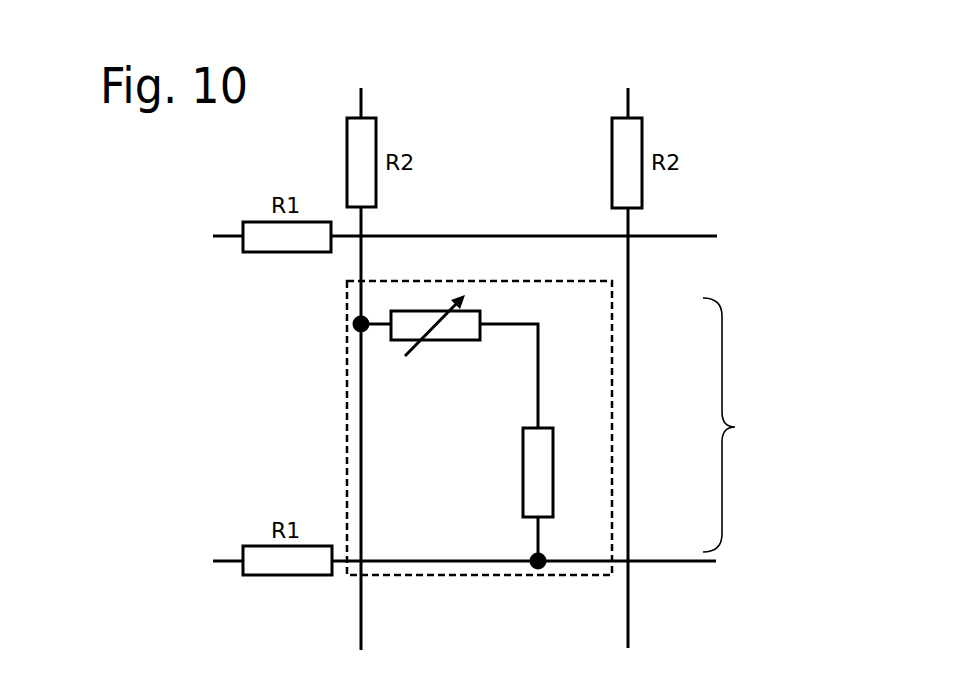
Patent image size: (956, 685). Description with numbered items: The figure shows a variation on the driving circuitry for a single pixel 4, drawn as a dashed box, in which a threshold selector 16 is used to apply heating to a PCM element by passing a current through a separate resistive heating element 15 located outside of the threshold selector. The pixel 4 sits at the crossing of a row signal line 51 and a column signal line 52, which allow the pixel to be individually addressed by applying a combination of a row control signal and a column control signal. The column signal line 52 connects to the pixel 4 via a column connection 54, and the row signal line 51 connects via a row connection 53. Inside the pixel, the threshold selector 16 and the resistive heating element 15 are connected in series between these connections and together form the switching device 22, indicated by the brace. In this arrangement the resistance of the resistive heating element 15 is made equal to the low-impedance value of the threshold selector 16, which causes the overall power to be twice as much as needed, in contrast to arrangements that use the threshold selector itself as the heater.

The pixel 4 is at (612, 425).
The resistive heating element 15 is at (537, 470).
The threshold selector 16 is at (443, 348).
The switching device 22 is at (768, 440).
The row signal line 51 is at (477, 235).
The column signal line 52 is at (361, 623).
The row connection 53 is at (538, 570).
The column connection 54 is at (353, 324).